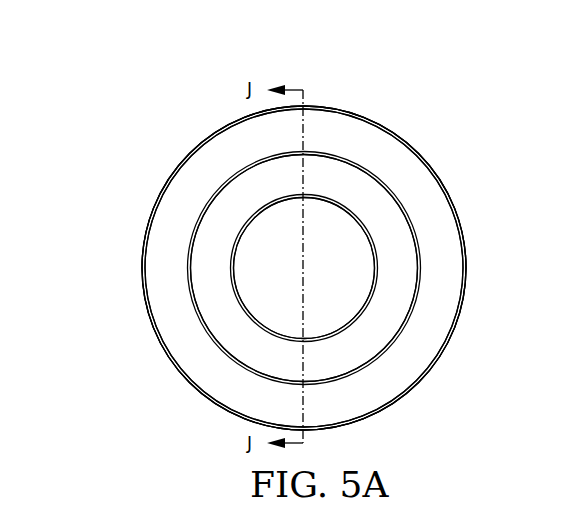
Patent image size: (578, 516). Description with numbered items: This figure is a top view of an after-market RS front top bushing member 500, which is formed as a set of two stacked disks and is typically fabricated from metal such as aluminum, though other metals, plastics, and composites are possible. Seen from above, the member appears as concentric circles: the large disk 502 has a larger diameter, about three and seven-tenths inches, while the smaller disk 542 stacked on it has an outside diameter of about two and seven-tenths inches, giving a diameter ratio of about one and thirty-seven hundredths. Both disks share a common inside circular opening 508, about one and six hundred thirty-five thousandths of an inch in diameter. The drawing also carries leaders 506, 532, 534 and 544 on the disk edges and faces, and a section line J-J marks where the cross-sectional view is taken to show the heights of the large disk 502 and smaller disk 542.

The front top bushing member 500 is at (150, 130).
The large disk 502 is at (380, 125).
The inner ring 506 is at (292, 196).
The inside circular opening 508 is at (255, 302).
The outer wall 532 is at (440, 314).
The outer edge 534 is at (425, 374).
The smaller disk 542 is at (408, 210).
The annular channel 544 is at (403, 258).